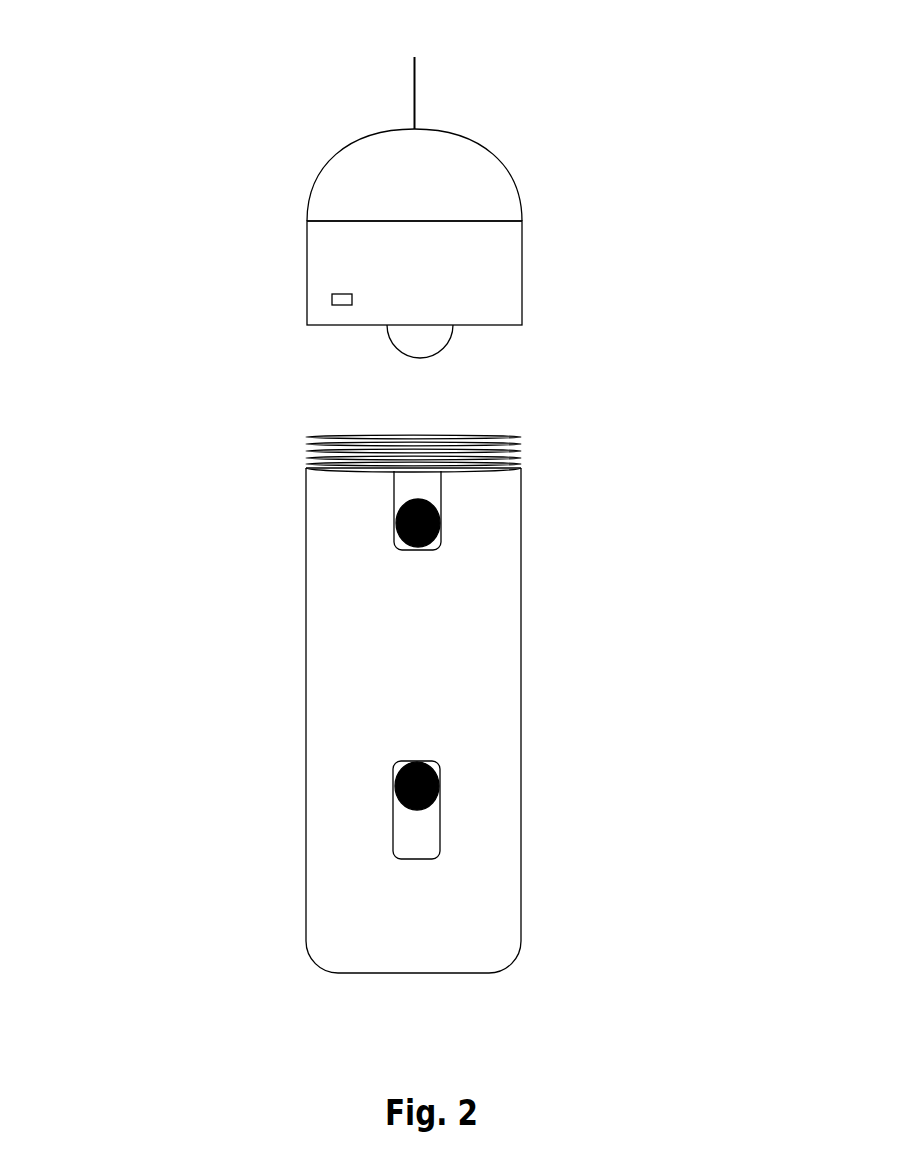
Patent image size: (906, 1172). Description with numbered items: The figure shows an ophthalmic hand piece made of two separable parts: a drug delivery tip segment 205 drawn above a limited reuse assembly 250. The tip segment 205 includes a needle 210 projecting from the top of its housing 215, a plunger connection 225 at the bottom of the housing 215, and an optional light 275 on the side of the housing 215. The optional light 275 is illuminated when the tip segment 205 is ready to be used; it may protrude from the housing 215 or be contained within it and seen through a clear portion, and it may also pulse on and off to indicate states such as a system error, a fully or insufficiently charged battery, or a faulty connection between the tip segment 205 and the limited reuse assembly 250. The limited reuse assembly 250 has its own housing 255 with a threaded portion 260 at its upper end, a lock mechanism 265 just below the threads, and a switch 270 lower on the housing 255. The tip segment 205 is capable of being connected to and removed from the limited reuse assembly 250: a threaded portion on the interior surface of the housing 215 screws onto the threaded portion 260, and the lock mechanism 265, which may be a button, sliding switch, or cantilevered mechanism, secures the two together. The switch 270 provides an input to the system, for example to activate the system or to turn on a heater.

The tip segment 205 is at (414, 207).
The needle 210 is at (437, 85).
The housing 215 is at (528, 173).
The plunger connection 225 is at (467, 347).
The optional light 275 is at (312, 294).
The limited reuse assembly 250 is at (411, 692).
The housing 255 is at (540, 677).
The threaded portion 260 is at (542, 445).
The lock mechanism 265 is at (460, 523).
The switch 270 is at (459, 784).